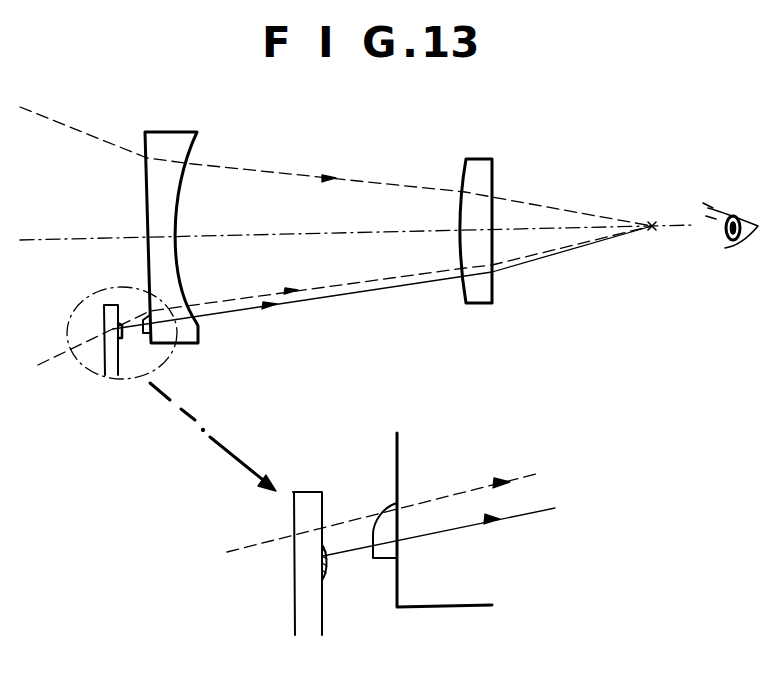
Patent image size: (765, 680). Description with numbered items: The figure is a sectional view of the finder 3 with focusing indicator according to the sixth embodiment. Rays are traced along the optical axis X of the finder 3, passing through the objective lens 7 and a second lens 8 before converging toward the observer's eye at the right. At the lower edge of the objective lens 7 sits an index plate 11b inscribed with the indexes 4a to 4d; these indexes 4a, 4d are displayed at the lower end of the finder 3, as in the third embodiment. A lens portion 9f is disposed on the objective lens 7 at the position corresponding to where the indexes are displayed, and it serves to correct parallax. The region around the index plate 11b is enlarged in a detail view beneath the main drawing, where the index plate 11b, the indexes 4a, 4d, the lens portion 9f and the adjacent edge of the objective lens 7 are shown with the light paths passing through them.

The finder 3 is at (351, 123).
The objective lens 7 is at (172, 131).
The eyepiece lens 8 is at (478, 158).
The optical axis X is at (49, 240).
The index plate 11b is at (310, 491).
The index 4a is at (225, 469).
The index 4d is at (322, 580).
The lens portion 9f is at (373, 562).